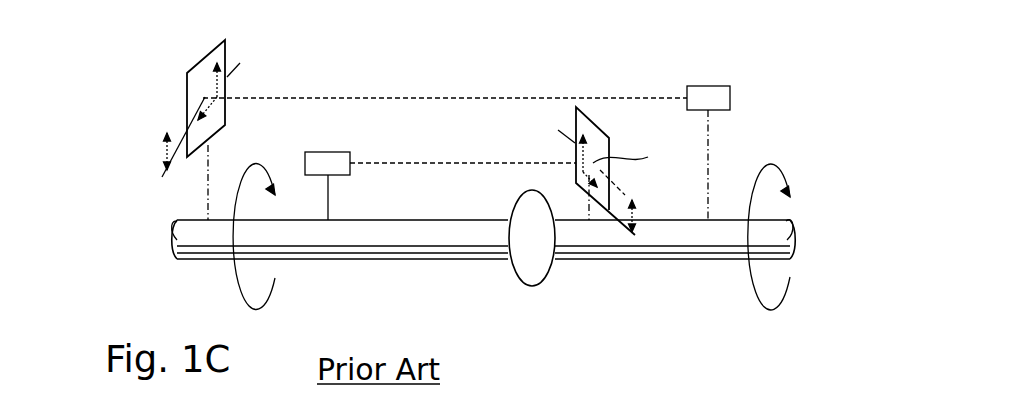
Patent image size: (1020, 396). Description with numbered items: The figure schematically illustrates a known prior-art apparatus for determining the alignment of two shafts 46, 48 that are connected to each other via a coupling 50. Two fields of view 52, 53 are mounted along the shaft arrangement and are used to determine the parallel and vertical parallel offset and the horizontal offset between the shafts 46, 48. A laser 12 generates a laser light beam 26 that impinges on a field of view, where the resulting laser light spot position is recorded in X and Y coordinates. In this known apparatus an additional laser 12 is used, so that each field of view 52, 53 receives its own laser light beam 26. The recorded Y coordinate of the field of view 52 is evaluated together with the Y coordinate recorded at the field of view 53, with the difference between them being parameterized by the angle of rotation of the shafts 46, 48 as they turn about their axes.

The laser 12 is at (322, 157).
The laser light beam 26 is at (390, 97).
The shaft 46 is at (397, 235).
The shaft 48 is at (667, 240).
The coupling 50 is at (513, 277).
The field of view 52 is at (590, 135).
The field of view 53 is at (202, 82).